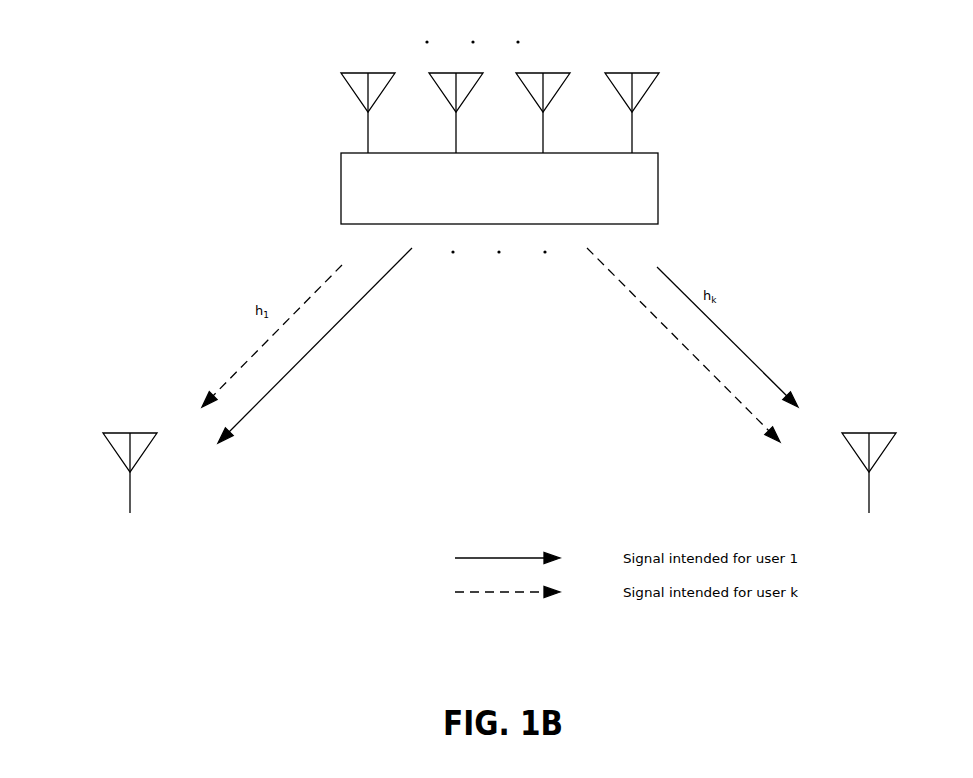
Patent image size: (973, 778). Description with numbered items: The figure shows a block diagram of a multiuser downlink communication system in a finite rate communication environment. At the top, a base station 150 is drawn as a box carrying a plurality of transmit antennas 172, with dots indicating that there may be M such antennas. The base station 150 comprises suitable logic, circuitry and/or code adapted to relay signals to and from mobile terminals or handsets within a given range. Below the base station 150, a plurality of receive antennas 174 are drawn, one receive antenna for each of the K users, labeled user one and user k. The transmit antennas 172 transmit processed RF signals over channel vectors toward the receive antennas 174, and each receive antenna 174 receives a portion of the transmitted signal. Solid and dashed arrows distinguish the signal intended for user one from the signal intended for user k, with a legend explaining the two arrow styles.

The base station 150 is at (658, 154).
The transmit antennas 172 is at (368, 73).
The receive antennas 174 is at (130, 433).